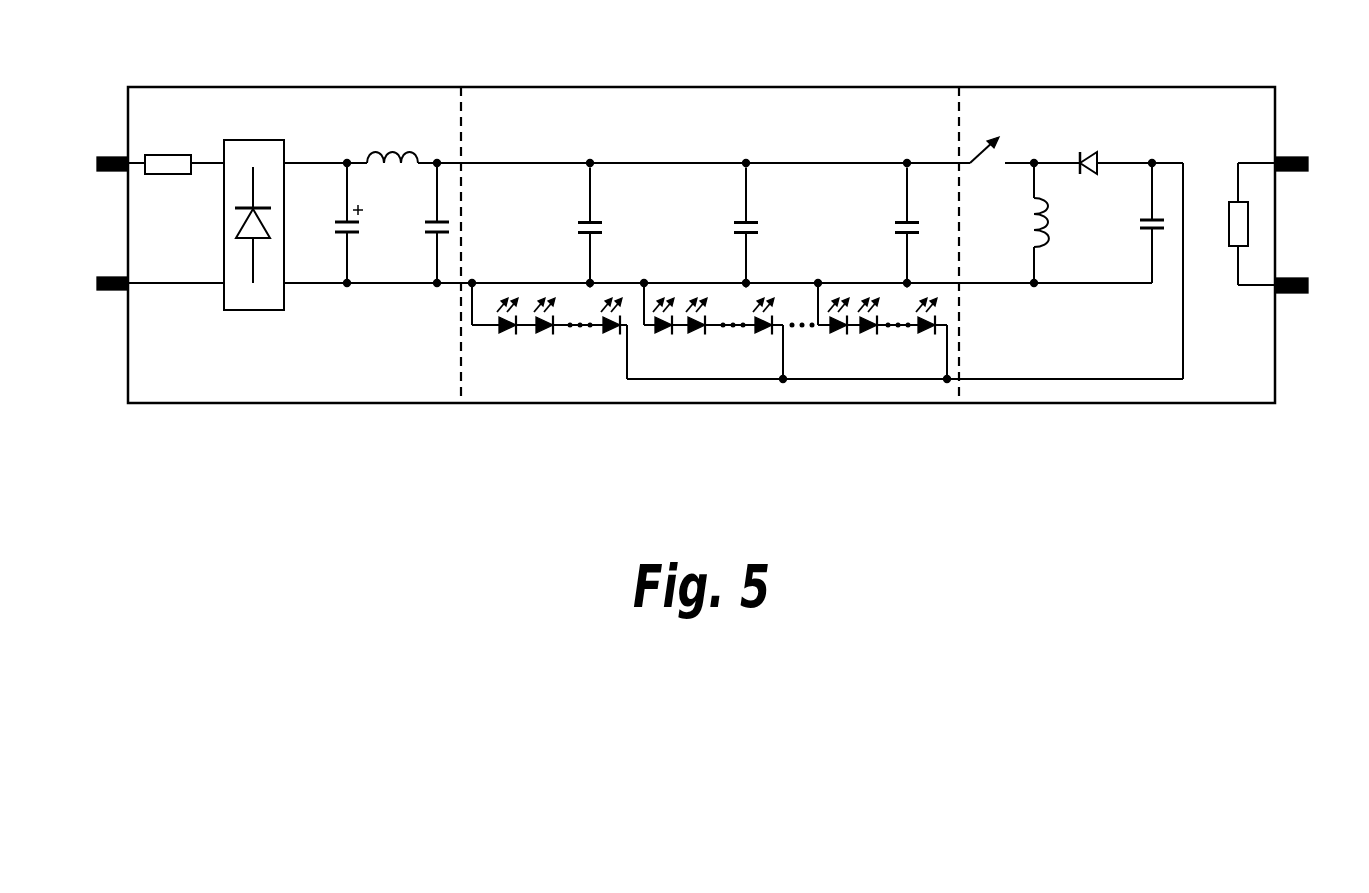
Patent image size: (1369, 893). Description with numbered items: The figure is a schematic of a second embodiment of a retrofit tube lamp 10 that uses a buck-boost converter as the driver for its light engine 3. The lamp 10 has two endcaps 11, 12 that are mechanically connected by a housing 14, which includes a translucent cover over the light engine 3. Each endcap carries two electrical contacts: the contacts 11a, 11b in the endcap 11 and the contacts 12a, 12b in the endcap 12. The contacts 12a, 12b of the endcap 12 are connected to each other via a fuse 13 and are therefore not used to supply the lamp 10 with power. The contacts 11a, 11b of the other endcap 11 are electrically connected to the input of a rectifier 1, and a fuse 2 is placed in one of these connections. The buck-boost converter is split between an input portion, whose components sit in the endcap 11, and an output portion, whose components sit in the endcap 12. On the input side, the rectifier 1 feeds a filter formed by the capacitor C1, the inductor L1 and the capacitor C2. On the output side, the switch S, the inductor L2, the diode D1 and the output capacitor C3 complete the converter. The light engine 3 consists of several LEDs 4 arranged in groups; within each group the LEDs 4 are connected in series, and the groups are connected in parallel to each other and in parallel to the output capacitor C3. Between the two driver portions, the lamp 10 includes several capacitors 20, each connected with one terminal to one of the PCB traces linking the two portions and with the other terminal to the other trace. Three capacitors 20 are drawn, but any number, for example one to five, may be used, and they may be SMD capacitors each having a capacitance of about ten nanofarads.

The rectifier 1 is at (260, 312).
The fuse 2 is at (166, 155).
The light engine 3 is at (457, 358).
The LEDs 4 is at (505, 333).
The retrofit tube lamp 10 is at (683, 432).
The endcap 11 is at (288, 404).
The electrical contact 11a is at (110, 157).
The electrical contact 11b is at (110, 277).
The endcap 12 is at (1122, 404).
The electrical contact 12a is at (1290, 155).
The electrical contact 12b is at (1290, 280).
The fuse 13 is at (1229, 222).
The housing 14 is at (567, 87).
The capacitors 20 is at (586, 221).
The capacitor C1 is at (332, 227).
The capacitor C2 is at (420, 227).
The output capacitor C3 is at (1134, 223).
The inductor L1 is at (392, 139).
The inductor L2 is at (1021, 223).
The diode D1 is at (1092, 150).
The switch S is at (985, 135).